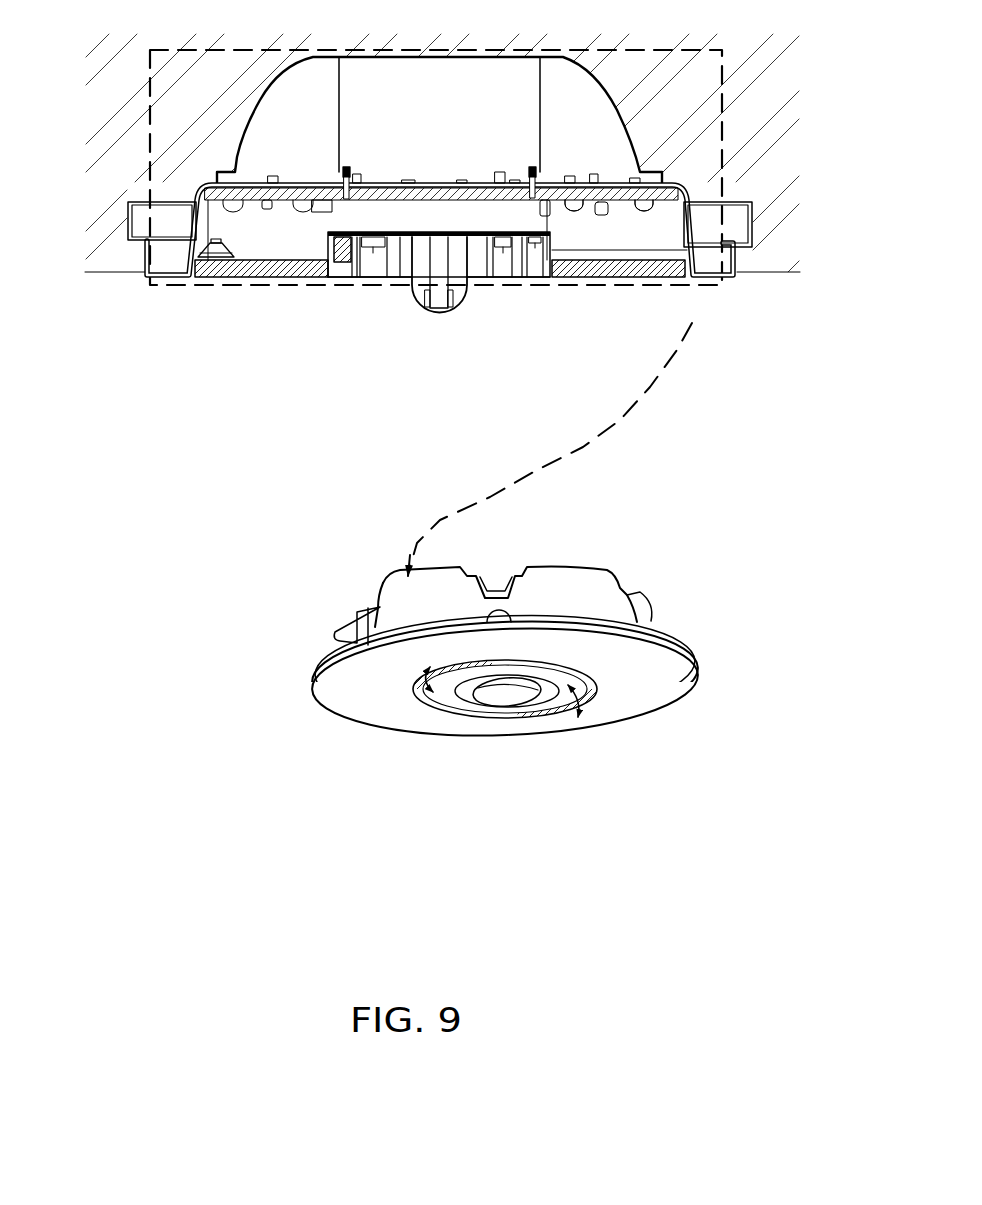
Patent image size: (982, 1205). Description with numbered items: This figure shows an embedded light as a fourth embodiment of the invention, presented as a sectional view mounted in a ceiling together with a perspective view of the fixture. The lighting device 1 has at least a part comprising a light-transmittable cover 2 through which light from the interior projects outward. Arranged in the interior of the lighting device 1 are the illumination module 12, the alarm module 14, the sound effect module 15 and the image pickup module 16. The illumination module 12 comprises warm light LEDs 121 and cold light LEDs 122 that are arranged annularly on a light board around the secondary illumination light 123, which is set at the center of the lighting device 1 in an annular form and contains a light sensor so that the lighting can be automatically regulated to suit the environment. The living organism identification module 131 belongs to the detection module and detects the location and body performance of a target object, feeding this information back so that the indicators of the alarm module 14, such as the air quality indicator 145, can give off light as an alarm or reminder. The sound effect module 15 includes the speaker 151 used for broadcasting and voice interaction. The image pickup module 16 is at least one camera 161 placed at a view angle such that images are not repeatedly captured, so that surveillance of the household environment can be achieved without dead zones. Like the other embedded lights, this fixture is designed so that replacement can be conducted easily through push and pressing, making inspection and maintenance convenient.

The lighting device 1 is at (309, 52).
The cover 2 is at (686, 283).
The illumination module 12 is at (262, 181).
The alarm module 14 is at (538, 286).
The sound effect module 15 is at (209, 236).
The image pickup module 16 is at (412, 247).
The warm light LED 121 is at (580, 197).
The cold light LED 122 is at (647, 197).
The secondary illumination light 123 is at (370, 277).
The living organism identification module 131 is at (338, 263).
The air quality indicator 145 is at (400, 277).
The speaker 151 is at (222, 260).
The camera 161 is at (740, 253).